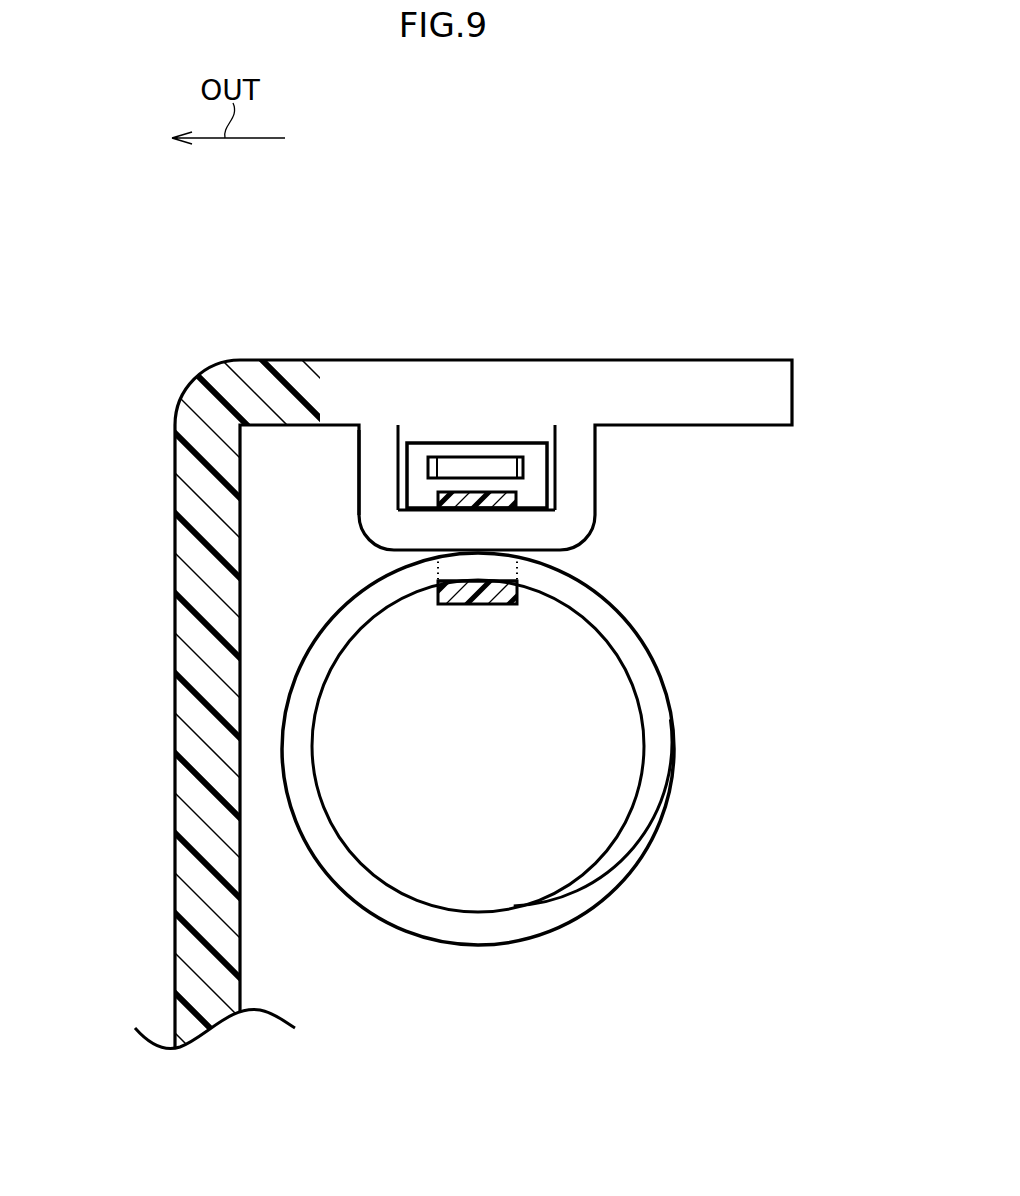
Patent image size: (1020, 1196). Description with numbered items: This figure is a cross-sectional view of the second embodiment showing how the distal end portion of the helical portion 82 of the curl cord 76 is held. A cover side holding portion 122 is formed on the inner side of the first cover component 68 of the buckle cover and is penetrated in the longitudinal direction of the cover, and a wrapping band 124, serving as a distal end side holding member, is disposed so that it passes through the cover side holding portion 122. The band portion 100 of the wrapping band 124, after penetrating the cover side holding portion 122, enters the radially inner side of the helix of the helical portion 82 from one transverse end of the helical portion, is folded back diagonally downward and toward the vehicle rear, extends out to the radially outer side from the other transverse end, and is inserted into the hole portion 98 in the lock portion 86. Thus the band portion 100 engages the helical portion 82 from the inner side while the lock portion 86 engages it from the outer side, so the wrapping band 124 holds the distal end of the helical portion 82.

The first cover component 68 is at (177, 693).
The curl cord 76 is at (697, 722).
The helical portion 82 is at (630, 873).
The lock portion 86 is at (542, 487).
The hole portion 98 is at (452, 463).
The band portion 100 is at (480, 465).
The cover side holding portion 122 is at (358, 483).
The wrapping band 124 is at (434, 618).